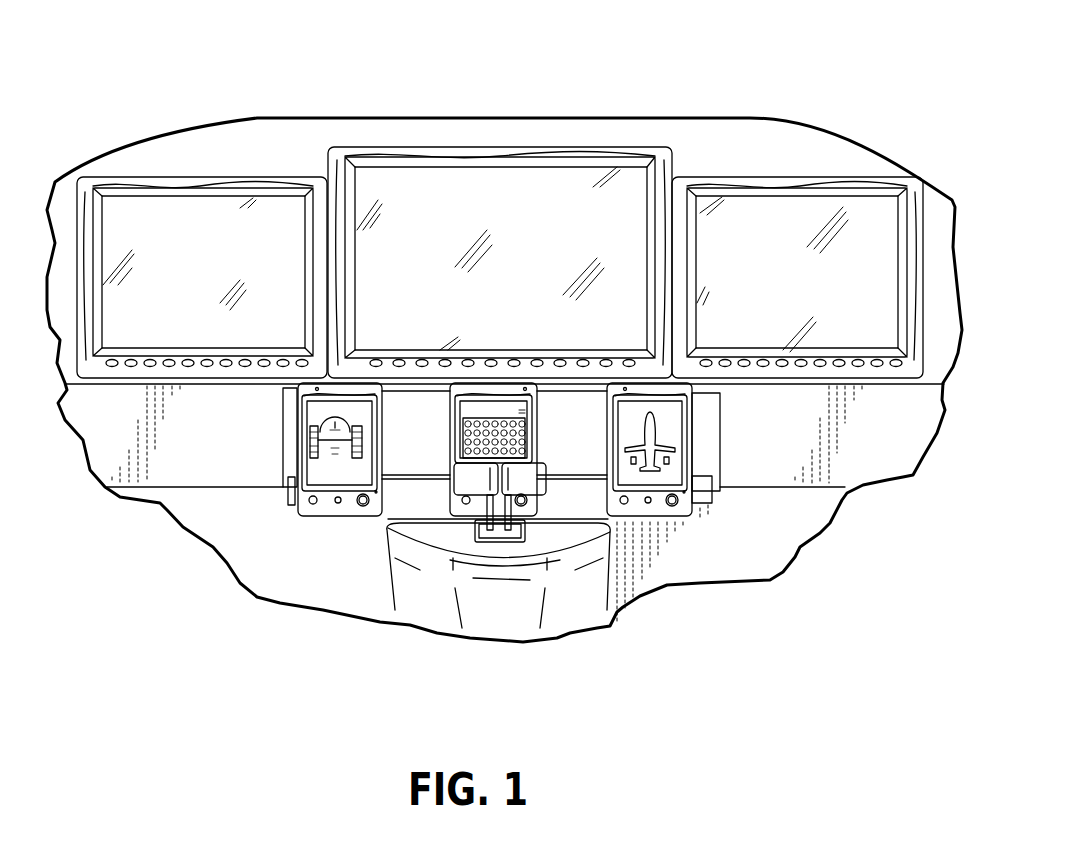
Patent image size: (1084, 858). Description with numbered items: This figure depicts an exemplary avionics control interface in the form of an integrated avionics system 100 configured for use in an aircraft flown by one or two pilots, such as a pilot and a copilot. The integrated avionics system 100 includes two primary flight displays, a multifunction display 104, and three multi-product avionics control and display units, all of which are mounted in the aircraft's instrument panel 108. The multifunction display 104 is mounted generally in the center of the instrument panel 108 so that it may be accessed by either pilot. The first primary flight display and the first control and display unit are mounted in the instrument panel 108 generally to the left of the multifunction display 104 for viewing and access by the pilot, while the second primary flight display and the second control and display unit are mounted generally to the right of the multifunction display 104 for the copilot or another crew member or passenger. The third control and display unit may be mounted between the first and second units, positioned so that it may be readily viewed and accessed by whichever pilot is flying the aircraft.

The integrated avionics system 100 is at (805, 48).
The multifunction display 104 is at (517, 212).
The instrument panel 108 is at (867, 438).